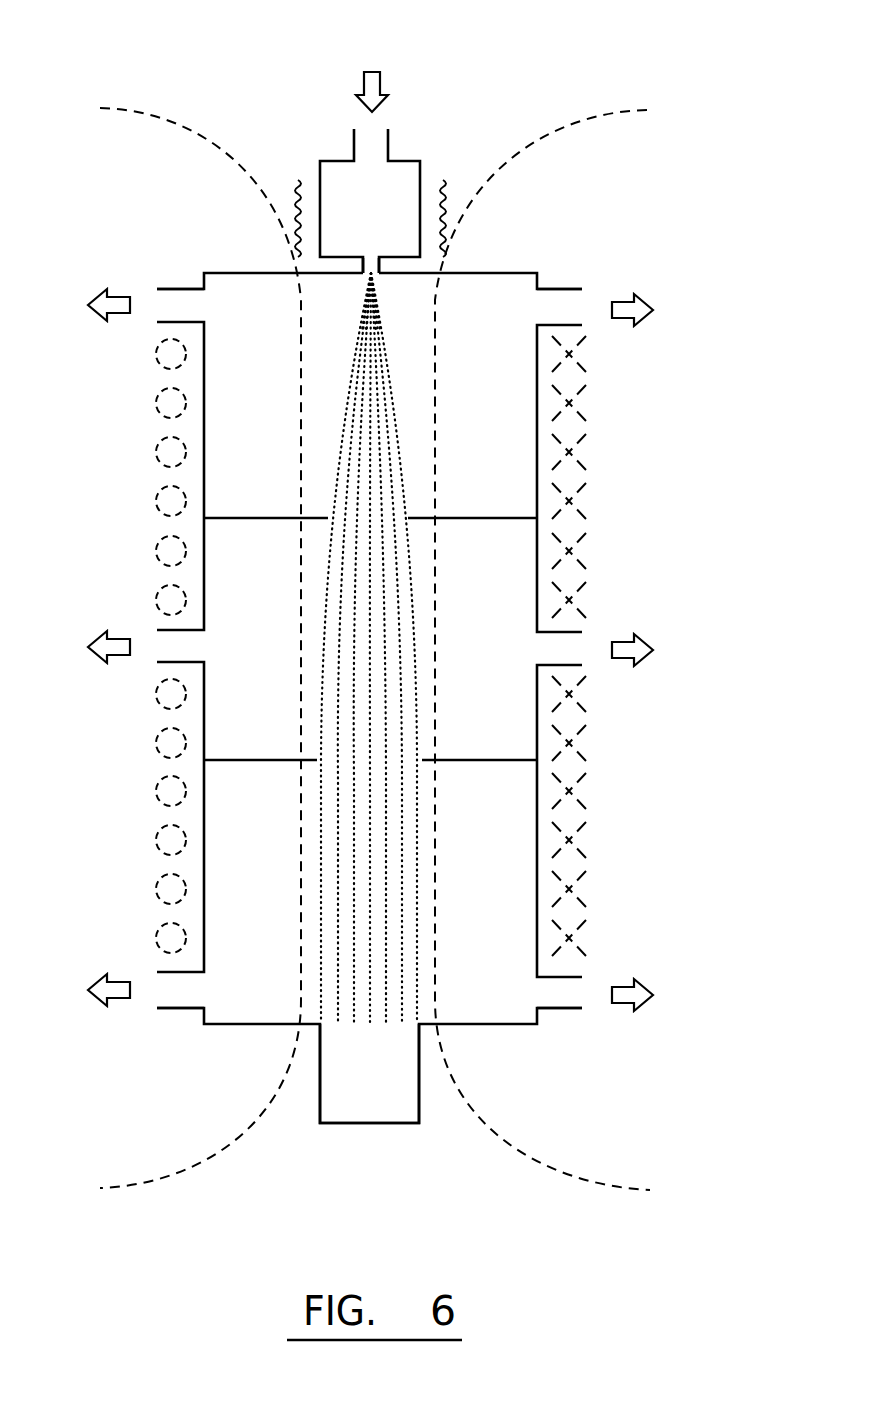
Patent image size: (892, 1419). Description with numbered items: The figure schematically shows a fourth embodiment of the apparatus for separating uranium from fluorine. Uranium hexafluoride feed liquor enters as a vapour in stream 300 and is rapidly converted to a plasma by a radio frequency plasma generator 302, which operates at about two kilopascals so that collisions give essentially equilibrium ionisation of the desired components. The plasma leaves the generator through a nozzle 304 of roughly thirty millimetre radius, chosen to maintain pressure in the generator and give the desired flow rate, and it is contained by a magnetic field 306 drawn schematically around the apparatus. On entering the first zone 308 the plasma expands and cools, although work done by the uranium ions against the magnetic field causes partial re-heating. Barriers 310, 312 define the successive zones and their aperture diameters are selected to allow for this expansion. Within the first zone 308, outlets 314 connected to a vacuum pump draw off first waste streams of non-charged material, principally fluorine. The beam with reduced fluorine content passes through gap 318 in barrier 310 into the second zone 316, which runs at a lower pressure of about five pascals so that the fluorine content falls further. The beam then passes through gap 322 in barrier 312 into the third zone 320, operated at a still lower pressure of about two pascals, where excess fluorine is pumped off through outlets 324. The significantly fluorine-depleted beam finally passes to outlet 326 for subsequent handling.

The stream 300 is at (371, 52).
The radio frequency plasma generator 302 is at (453, 150).
The nozzle 304 is at (381, 272).
The magnetic field 306 is at (175, 108).
The zone 1 308 is at (505, 447).
The barrier 310 is at (487, 518).
The barrier 312 is at (477, 761).
The outlets 314 is at (175, 298).
The zone 2 316 is at (508, 580).
The gap 318 is at (370, 522).
The zone 3 320 is at (508, 927).
The gap 322 is at (368, 768).
The outlets 324 is at (178, 998).
The outlet 326 is at (378, 1084).